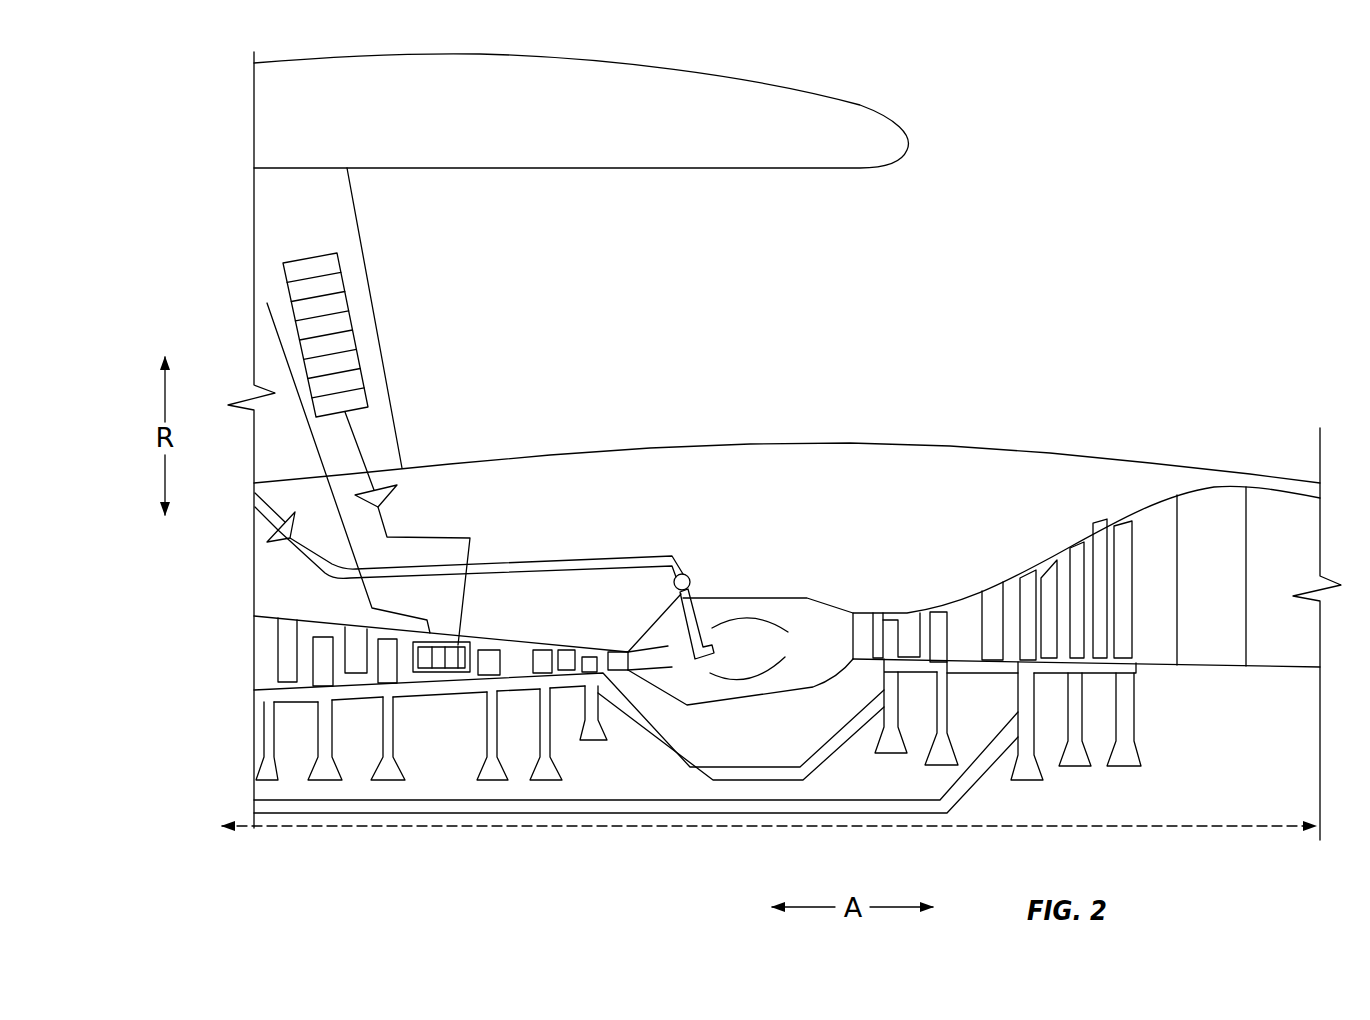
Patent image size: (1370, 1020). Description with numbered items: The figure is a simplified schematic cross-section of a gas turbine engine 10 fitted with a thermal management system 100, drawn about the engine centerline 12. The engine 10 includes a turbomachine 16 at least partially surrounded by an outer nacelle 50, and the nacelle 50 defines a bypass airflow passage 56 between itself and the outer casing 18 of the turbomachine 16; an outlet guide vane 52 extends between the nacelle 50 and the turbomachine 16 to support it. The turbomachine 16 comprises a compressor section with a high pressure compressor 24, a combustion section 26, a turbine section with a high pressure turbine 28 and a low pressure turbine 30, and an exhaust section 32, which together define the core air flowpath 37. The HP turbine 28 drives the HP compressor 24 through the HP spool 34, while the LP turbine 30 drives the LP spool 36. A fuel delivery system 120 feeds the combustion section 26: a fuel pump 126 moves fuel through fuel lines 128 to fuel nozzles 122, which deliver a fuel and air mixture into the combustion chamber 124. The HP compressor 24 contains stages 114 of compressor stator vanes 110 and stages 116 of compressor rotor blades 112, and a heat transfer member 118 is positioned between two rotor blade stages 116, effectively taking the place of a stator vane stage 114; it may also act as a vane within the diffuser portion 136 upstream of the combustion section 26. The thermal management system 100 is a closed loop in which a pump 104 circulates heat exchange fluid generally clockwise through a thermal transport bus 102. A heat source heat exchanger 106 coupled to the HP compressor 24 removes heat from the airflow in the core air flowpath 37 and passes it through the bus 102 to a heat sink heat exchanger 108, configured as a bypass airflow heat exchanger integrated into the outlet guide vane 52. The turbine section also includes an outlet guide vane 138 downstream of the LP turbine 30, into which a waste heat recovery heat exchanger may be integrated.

The gas turbine engine 10 is at (1107, 158).
The centerline axis 12 is at (1178, 832).
The turbomachine 16 is at (999, 394).
The outer casing 18 is at (856, 444).
The high pressure compressor 24 is at (544, 606).
The combustion section 26 is at (809, 555).
The high pressure turbine 28 is at (908, 589).
The low pressure turbine 30 is at (1103, 496).
The exhaust section 32 is at (1283, 525).
The high pressure spool 34 is at (750, 777).
The low pressure spool 36 is at (530, 810).
The core air flowpath 37 is at (265, 660).
The outer nacelle 50 is at (660, 87).
The outlet guide vane 52 is at (367, 253).
The bypass airflow passage 56 is at (702, 312).
The thermal management system 100 is at (448, 487).
The thermal transport bus 102 is at (443, 543).
The pump 104 is at (398, 485).
The heat source heat exchanger 106 is at (458, 649).
The heat sink heat exchanger 108 is at (352, 325).
The compressor stator vanes 110 is at (357, 642).
The compressor rotor blades 112 is at (323, 655).
The stages of compressor stator vanes 114 is at (566, 652).
The stages of compressor rotor blades 116 is at (311, 668).
The heat transfer member 118 is at (440, 678).
The fuel delivery system 120 is at (533, 542).
The fuel nozzles 122 is at (700, 617).
The combustion chamber 124 is at (730, 663).
The fuel pump 126 is at (267, 542).
The fuel lines 128 is at (647, 556).
The diffuser portion 136 is at (627, 645).
The outlet guide vane 138 is at (1213, 507).